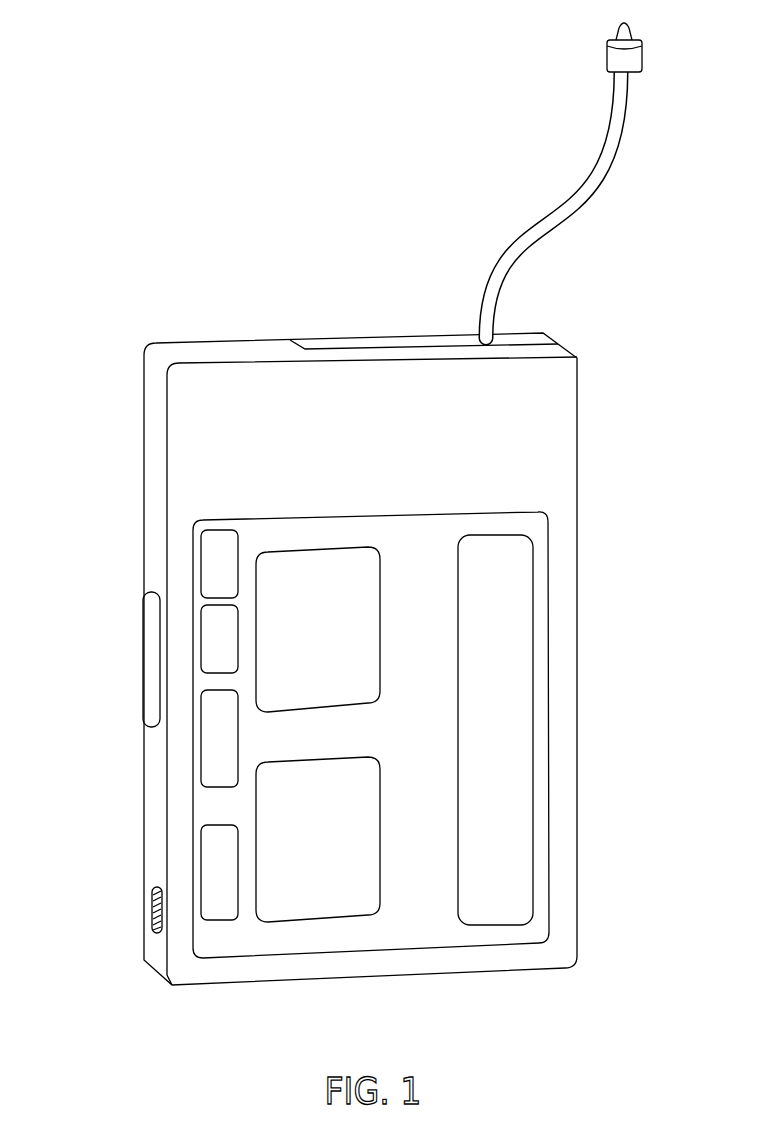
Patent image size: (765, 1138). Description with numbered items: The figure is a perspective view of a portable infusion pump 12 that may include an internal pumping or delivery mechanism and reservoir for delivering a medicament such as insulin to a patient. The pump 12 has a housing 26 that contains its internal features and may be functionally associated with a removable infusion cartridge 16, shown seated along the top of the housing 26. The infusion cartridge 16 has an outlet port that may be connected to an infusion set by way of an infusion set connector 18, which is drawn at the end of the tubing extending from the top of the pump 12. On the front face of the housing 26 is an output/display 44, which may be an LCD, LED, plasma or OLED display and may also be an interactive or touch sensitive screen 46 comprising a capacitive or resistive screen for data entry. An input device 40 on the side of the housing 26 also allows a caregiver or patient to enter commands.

The pump 12 is at (387, 501).
The infusion cartridge 16 is at (385, 345).
The infusion set connector 18 is at (643, 57).
The housing 26 is at (555, 416).
The input device 40 is at (150, 640).
The output/display 44 is at (414, 726).
The touch sensitive screen 46 is at (508, 782).